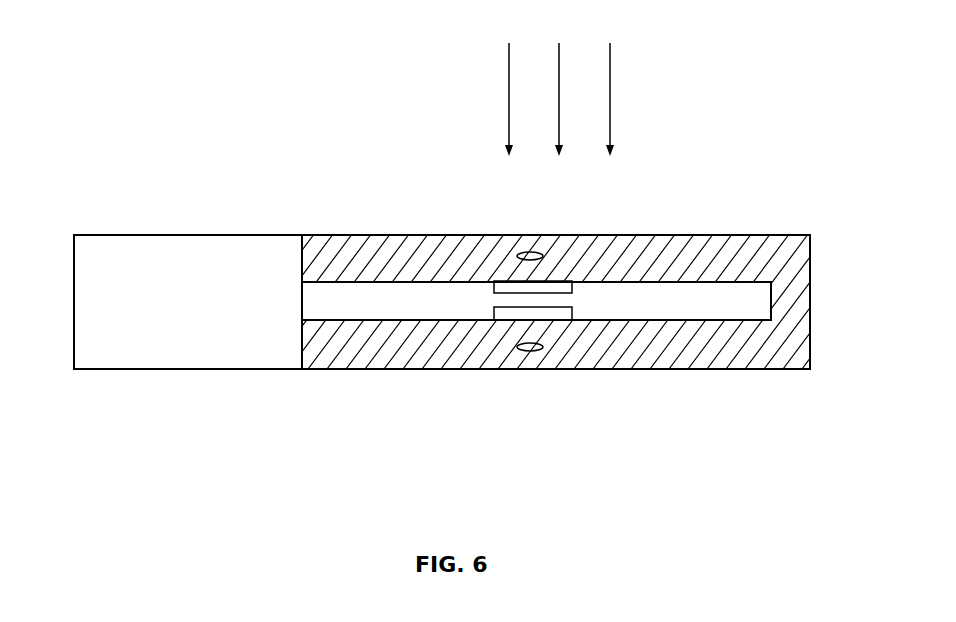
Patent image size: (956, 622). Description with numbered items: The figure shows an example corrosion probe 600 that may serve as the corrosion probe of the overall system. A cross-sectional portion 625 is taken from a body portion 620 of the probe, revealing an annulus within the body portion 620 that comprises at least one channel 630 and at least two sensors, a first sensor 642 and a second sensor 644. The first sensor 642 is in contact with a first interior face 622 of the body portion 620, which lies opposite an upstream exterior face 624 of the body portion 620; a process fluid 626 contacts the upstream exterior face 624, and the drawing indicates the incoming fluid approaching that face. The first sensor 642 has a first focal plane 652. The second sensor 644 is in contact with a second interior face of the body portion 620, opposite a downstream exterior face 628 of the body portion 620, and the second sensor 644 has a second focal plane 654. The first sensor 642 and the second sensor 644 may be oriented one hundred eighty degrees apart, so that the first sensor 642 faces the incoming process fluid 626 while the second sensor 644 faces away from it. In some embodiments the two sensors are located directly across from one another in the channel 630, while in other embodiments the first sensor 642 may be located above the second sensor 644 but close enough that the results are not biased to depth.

The corrosion probe 600 is at (565, 485).
The body portion 620 is at (125, 263).
The first interior face 622 is at (625, 277).
The upstream exterior face 624 is at (368, 275).
The cross-sectional portion 625 is at (767, 370).
The process fluid 626 is at (630, 121).
The downstream exterior face 628 is at (378, 340).
The channel 630 is at (345, 305).
The first sensor 642 is at (503, 280).
The second sensor 644 is at (502, 320).
The first focal plane 652 is at (541, 253).
The second focal plane 654 is at (535, 351).